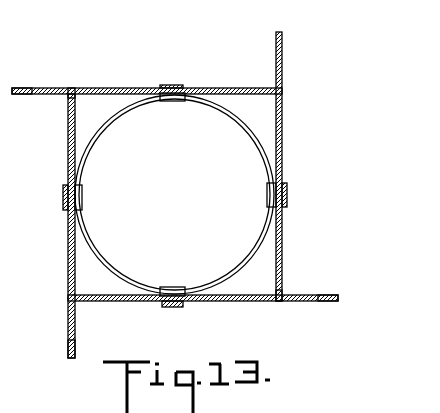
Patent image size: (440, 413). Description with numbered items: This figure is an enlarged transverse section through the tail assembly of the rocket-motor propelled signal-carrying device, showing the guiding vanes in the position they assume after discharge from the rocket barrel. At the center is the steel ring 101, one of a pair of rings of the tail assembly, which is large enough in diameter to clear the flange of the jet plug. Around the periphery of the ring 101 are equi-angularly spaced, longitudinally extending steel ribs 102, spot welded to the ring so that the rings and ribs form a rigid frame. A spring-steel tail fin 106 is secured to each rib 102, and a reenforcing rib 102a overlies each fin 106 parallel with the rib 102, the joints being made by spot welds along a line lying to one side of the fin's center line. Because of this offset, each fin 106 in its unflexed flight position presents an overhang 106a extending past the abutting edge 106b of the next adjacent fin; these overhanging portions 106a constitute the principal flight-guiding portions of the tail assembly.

The ring 101 is at (249, 127).
The longitudinally extending rib 102 is at (190, 92).
The reenforcing rib 102a is at (171, 85).
The tail fin 106 is at (114, 88).
The overhang 106a is at (33, 88).
The abutting edge 106b is at (69, 97).